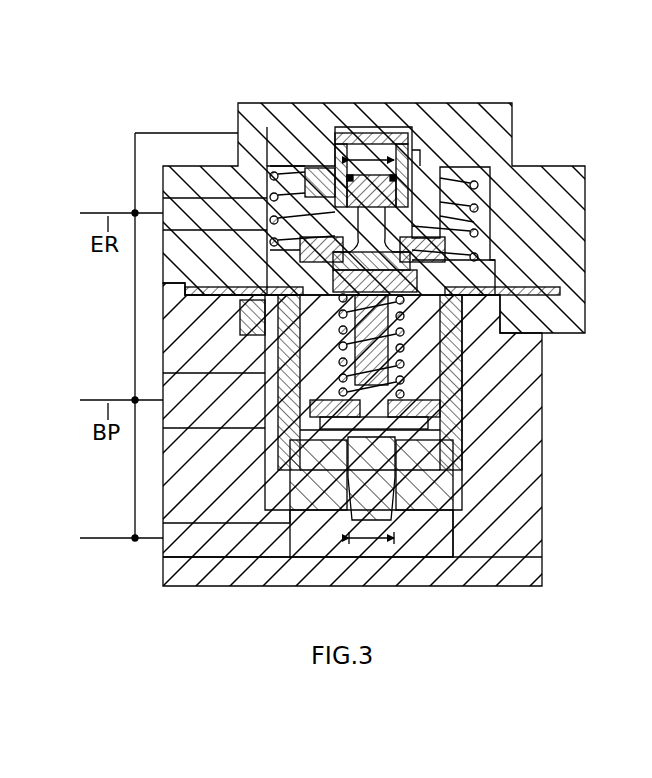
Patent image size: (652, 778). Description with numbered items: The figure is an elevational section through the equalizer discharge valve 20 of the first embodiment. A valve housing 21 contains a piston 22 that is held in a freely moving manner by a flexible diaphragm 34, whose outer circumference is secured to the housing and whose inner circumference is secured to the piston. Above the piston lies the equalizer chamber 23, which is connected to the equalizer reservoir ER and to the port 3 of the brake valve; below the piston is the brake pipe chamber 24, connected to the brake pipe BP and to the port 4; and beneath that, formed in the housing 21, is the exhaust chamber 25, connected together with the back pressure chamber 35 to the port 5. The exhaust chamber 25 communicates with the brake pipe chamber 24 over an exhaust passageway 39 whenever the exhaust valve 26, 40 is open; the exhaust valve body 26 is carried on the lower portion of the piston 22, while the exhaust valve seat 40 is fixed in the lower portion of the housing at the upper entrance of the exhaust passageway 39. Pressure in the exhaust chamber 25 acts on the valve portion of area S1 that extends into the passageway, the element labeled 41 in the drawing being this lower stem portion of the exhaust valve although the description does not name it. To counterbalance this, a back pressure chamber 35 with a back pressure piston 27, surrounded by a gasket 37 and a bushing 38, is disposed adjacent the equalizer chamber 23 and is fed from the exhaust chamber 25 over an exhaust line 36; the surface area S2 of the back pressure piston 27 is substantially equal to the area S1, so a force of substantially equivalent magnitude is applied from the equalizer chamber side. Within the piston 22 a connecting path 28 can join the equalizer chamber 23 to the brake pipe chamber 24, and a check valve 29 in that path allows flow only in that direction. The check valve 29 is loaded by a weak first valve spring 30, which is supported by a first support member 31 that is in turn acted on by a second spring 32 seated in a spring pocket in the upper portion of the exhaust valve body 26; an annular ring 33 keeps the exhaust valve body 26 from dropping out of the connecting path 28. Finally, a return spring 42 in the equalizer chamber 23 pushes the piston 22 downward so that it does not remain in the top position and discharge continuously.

The port 3 is at (117, 201).
The port 4 is at (117, 388).
The port 5 is at (117, 526).
The equalizer discharge valve 20 is at (428, 100).
The valve housing 21 is at (326, 328).
The piston 22 is at (472, 318).
The equalizer chamber 23 is at (478, 192).
The brake pipe chamber 24 is at (278, 412).
The exhaust chamber 25 is at (340, 556).
The exhaust valve body 26 is at (348, 520).
The back pressure piston 27 is at (478, 218).
The connecting path 28 is at (270, 213).
The check valve 29 is at (285, 288).
The first valve spring 30 is at (288, 305).
The first support member 31 is at (292, 352).
The second spring 32 is at (395, 365).
The annular ring 33 is at (432, 413).
The diaphragm 34 is at (540, 290).
The back pressure chamber 35 is at (368, 140).
The exhaust line 36 is at (170, 133).
The gasket 37 is at (410, 175).
The bushing 38 is at (334, 164).
The exhaust passageway 39 is at (392, 520).
The exhaust valve seat 40 is at (400, 452).
The stem 41 is at (350, 462).
The return spring 42 is at (278, 172).
The area of exhaust valve portion S1 is at (372, 545).
The surface area of back pressure piston S2 is at (378, 160).